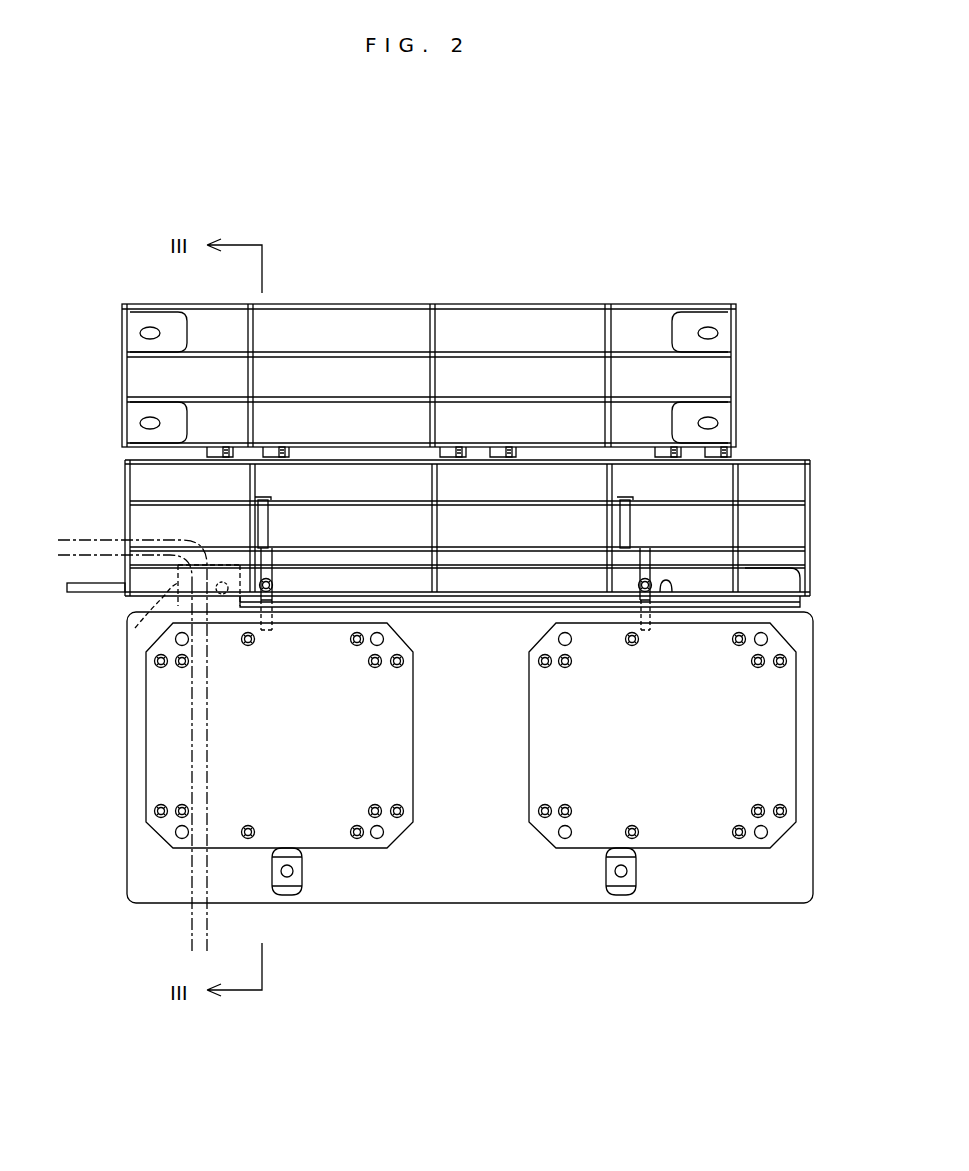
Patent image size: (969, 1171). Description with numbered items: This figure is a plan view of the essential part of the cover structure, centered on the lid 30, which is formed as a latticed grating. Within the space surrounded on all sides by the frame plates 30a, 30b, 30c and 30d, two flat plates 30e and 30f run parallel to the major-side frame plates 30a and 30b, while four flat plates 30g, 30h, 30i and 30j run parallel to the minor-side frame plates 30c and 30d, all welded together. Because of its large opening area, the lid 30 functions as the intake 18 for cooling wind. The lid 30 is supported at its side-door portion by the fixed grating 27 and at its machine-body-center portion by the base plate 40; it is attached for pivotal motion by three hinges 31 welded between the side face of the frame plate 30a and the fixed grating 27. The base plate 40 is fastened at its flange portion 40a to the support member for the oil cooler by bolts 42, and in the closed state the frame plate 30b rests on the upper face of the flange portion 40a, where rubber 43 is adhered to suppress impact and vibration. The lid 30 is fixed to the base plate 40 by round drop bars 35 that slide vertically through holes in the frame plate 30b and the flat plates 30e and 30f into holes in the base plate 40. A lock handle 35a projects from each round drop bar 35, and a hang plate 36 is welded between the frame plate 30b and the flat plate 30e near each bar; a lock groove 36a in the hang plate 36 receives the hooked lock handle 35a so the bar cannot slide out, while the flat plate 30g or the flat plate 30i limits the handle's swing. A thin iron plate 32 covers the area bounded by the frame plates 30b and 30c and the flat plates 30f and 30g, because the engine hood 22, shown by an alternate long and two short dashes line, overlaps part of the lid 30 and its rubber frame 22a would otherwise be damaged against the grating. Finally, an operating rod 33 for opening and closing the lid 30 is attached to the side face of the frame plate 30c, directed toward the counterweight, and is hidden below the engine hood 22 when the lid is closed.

The intake 18 is at (429, 340).
The fixed grating 27 is at (565, 307).
The hinges 31 is at (262, 452).
The lid 30 is at (461, 535).
The frame plate 30a is at (350, 462).
The frame plate 30b is at (455, 600).
The frame plate 30c is at (160, 508).
The frame plate 30d is at (812, 512).
The flat plate 30e is at (352, 548).
The flat plate 30f is at (355, 503).
The flat plate 30g is at (257, 480).
The flat plate 30h is at (437, 484).
The flat plate 30i is at (614, 484).
The flat plate 30j is at (738, 480).
The thin iron plate 32 is at (160, 508).
The round drop bars 35 is at (258, 520).
The lock handle 35a is at (262, 585).
The hang plate 36 is at (270, 555).
The lock groove 36a is at (275, 590).
The bolts 42 is at (668, 580).
The engine hood 22 is at (210, 735).
The rubber frame 22a is at (100, 545).
The operating rod 33 is at (90, 593).
The base plate 40 is at (506, 744).
The flange portion 40a is at (800, 603).
The rubber 43 is at (510, 596).